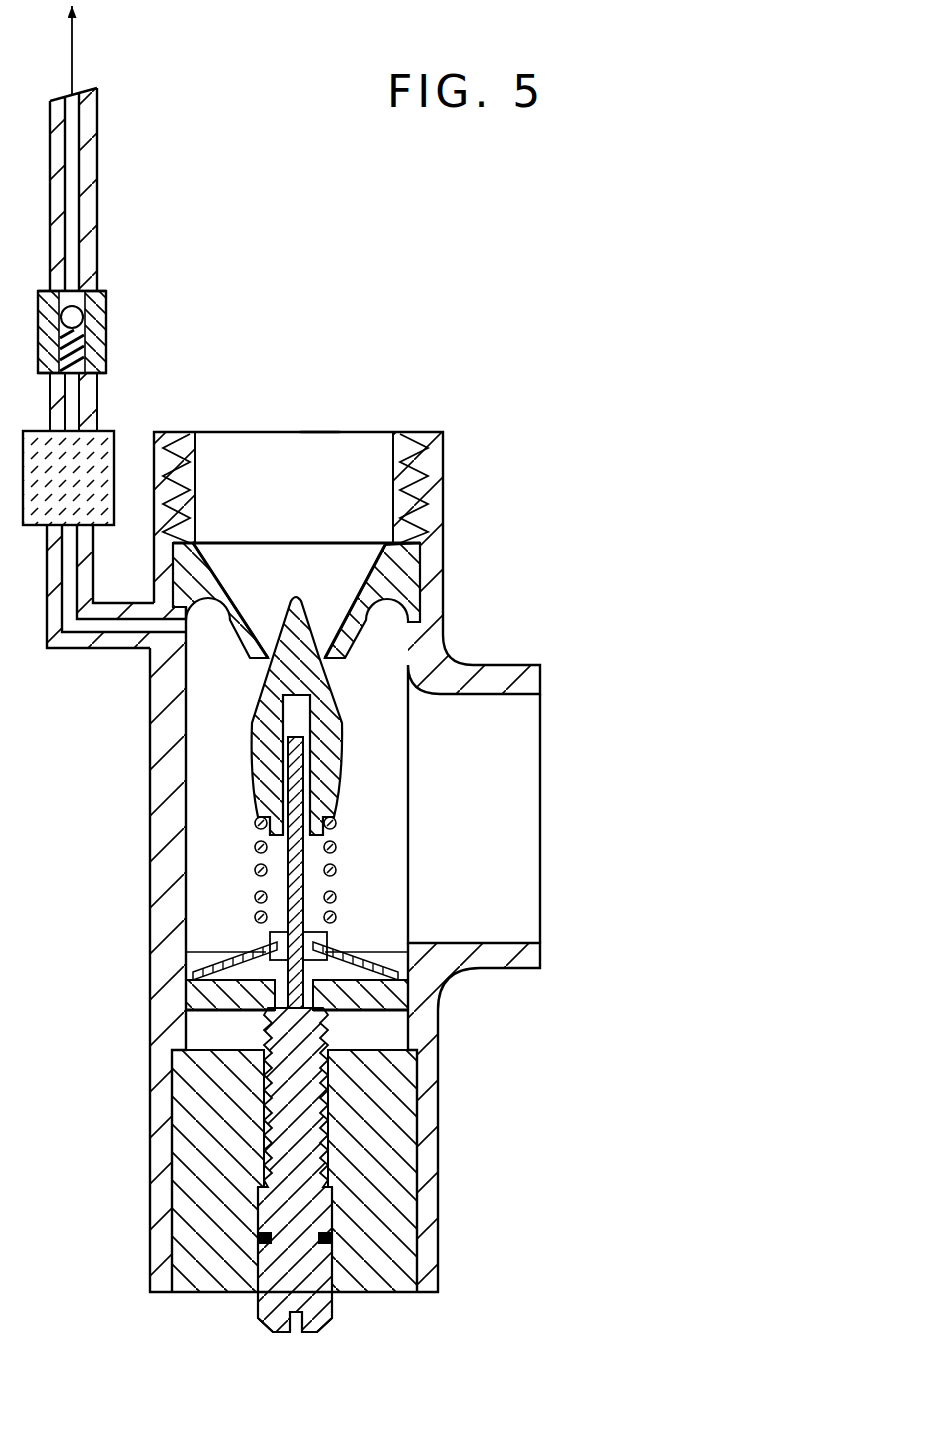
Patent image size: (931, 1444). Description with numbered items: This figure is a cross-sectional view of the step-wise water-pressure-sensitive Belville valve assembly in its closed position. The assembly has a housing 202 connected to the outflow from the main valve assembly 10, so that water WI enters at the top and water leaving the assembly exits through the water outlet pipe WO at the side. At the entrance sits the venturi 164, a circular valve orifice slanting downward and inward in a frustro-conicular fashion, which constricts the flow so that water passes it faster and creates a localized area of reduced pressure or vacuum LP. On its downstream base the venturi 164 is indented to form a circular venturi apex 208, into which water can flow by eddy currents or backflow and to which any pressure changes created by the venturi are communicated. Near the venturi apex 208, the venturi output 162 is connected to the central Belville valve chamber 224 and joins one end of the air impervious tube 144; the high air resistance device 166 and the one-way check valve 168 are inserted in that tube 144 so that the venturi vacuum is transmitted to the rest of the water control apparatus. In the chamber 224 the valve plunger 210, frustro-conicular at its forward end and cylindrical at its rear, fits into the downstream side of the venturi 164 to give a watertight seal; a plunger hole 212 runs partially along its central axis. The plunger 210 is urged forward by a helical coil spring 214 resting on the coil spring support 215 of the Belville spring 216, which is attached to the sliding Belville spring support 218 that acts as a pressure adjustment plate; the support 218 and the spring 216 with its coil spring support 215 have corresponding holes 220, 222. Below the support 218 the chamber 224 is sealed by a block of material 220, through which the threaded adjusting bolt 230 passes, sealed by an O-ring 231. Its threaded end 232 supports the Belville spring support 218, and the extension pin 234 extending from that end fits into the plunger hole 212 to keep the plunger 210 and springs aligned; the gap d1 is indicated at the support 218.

The main valve assembly 10 is at (396, 430).
The air impervious tube 144 is at (103, 184).
The one-way check valve 168 is at (108, 318).
The high air resistance device 166 is at (117, 427).
The venturi output 162 is at (135, 651).
The housing 202 is at (445, 470).
The venturi 164 is at (361, 570).
The venturi apex 208 is at (237, 654).
The low pressure area LP is at (204, 618).
The water inlet WI is at (298, 466).
The water outlet pipe WO is at (688, 820).
The valve plunger 210 is at (340, 727).
The plunger hole 212 is at (292, 716).
The Belville valve chamber 224 is at (390, 798).
The helical coil spring 214 is at (256, 843).
The extension pin 234 is at (377, 868).
The coil spring support 215 is at (258, 937).
The block of material 220 is at (262, 938).
The hole 222 is at (320, 960).
The Belville spring 216 is at (372, 949).
The sliding Belville spring support 218 is at (184, 946).
The threaded end 232 is at (268, 1031).
The adjusting bolt 230 is at (327, 1333).
The O-ring 231 is at (250, 1246).
The gap dimension d1 is at (95, 968).